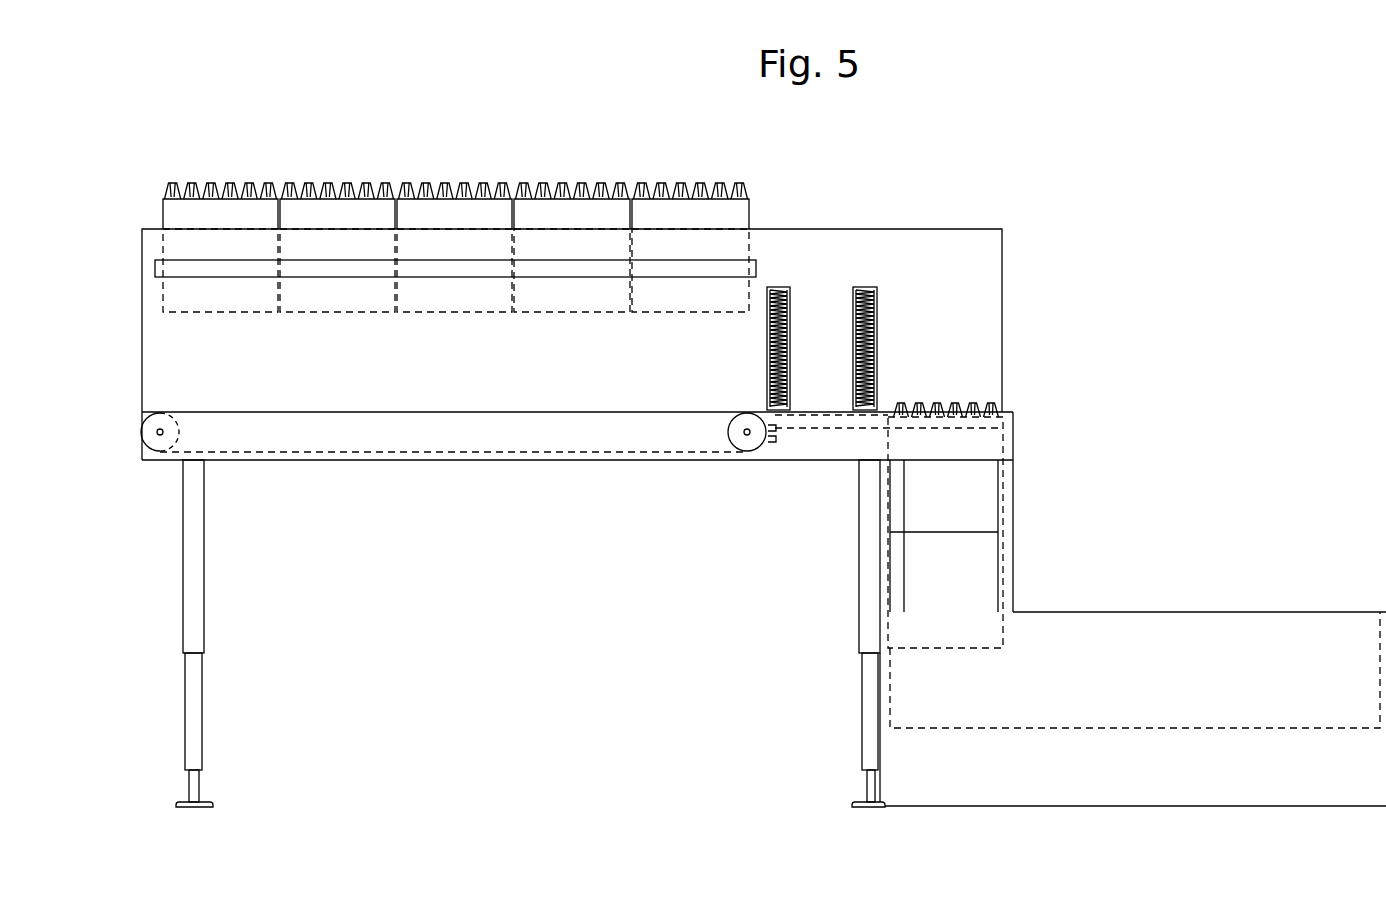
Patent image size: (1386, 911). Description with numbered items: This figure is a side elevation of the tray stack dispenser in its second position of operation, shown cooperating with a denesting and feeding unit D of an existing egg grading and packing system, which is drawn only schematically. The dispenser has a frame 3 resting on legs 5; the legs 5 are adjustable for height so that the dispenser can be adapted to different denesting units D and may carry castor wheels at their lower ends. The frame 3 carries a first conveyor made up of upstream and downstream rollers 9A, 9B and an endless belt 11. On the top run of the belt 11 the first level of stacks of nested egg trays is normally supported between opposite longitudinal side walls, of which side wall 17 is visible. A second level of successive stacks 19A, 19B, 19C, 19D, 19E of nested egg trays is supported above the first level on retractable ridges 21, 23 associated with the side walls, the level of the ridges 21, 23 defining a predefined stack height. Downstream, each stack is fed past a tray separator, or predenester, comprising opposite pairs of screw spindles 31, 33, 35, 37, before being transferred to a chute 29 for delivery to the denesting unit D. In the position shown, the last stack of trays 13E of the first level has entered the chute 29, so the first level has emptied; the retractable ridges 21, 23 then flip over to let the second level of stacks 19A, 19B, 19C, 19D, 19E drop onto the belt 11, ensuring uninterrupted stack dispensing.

The frame 3 is at (567, 462).
The legs 5 is at (193, 548).
The upstream roller 9A is at (156, 445).
The downstream roller 9B is at (742, 445).
The endless belt 11 is at (395, 455).
The last stack of trays 13E is at (962, 480).
The longitudinal side wall 17 is at (967, 278).
The stack of nested egg trays 19A is at (687, 218).
The stack of nested egg trays 19B is at (568, 218).
The stack of nested egg trays 19C is at (471, 218).
The stack of nested egg trays 19D is at (335, 218).
The stack of nested egg trays 19E is at (237, 218).
The retractable ridge 21 is at (455, 318).
The retractable ridge 23 is at (360, 267).
The chute 29 is at (1003, 555).
The screw spindle 31 is at (807, 277).
The screw spindle 33 is at (903, 277).
The screw spindle 35 is at (781, 287).
The screw spindle 37 is at (866, 287).
The denesting and feeding unit D is at (1320, 665).